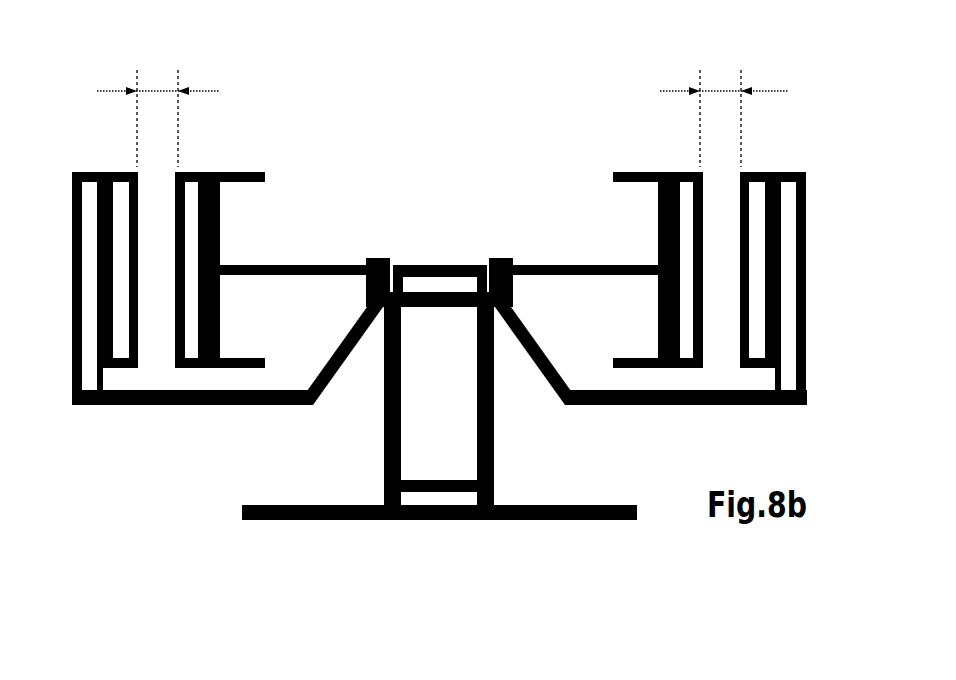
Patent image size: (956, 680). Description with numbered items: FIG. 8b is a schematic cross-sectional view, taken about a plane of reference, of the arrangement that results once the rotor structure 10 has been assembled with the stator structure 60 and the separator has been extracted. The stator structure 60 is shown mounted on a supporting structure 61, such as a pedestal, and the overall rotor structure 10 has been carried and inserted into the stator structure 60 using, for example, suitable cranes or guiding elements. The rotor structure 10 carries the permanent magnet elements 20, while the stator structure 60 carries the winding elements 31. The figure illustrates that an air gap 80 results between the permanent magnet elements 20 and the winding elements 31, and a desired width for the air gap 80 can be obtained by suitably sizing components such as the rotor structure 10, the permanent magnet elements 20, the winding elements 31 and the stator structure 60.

The rotor structure 10 is at (281, 177).
The permanent magnet elements 20 is at (193, 193).
The winding elements 31 is at (122, 193).
The stator structure 60 is at (88, 193).
The supporting structure 61 is at (228, 521).
The air gap 80 is at (157, 88).